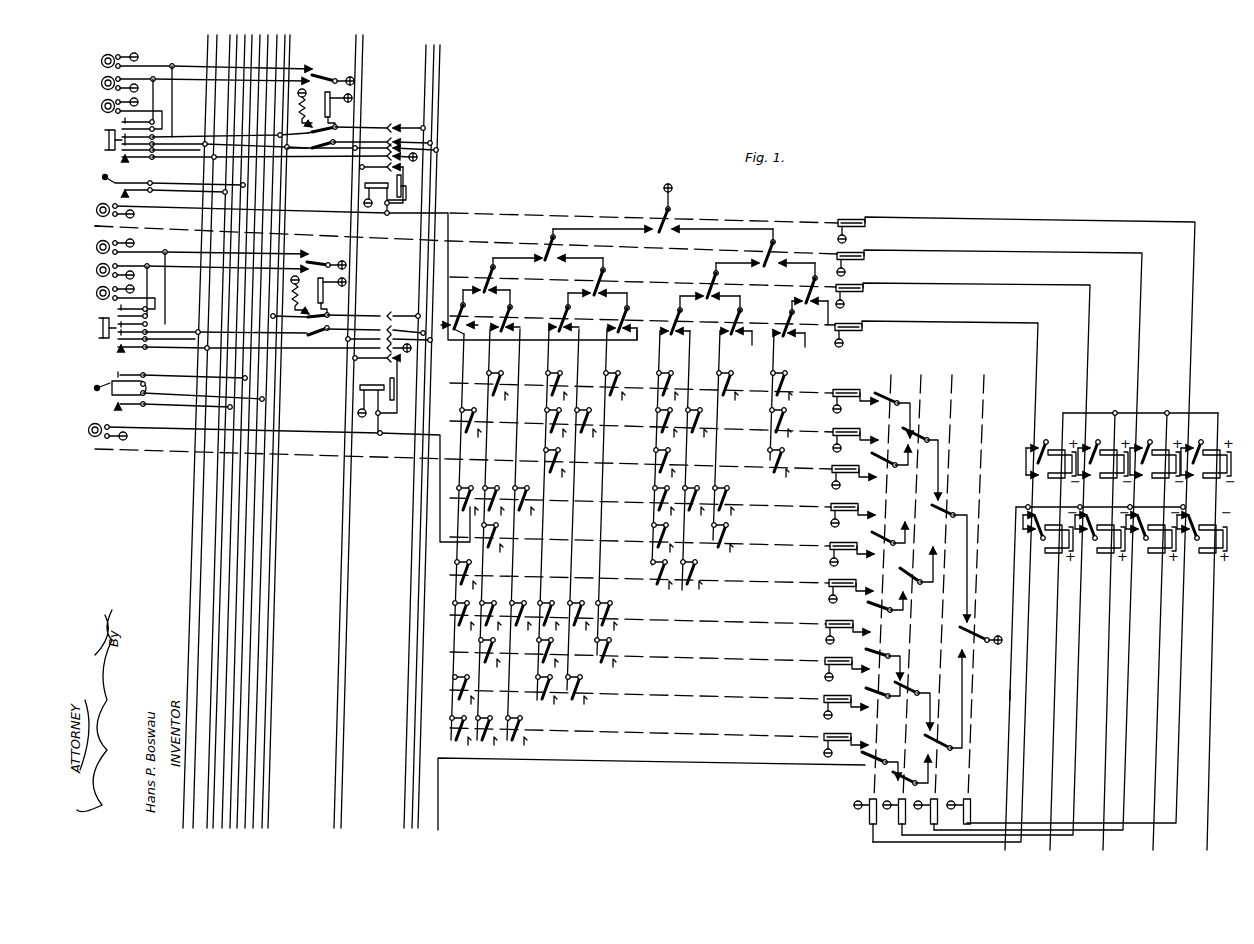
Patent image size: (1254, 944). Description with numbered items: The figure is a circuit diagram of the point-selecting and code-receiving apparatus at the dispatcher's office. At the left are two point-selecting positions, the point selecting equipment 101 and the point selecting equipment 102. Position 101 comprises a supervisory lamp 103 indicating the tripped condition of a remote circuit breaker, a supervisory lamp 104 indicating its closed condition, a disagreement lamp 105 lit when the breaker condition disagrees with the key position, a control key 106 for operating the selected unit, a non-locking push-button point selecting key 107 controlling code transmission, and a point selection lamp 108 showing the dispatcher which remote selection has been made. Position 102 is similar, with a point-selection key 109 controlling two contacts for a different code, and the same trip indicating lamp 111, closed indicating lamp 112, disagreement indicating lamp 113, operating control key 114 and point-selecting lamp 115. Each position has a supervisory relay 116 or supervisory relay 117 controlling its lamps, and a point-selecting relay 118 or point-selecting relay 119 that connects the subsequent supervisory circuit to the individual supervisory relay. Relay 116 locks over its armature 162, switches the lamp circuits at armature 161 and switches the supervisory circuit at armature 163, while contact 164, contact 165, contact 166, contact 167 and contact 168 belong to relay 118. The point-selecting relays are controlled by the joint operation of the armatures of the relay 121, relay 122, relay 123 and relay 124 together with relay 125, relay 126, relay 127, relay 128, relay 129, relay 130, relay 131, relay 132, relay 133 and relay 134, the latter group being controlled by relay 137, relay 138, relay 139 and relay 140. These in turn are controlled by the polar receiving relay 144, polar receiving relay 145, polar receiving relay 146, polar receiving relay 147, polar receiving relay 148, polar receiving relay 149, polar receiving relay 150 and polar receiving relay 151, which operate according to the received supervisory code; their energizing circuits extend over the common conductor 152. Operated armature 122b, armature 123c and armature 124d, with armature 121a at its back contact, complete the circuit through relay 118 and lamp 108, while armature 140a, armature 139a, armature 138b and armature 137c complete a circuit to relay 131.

The point selecting equipment 101 is at (99, 47).
The point selecting equipment 102 is at (101, 325).
The supervisory lamp 103 is at (106, 55).
The supervisory lamp 104 is at (101, 82).
The disagreement lamp 105 is at (101, 106).
The control key 106 is at (105, 134).
The point selecting key 107 is at (104, 176).
The point selection lamp 108 is at (103, 216).
The point-selection key 109 is at (96, 387).
The trip indicating lamp 111 is at (97, 249).
The closed indicating lamp 112 is at (97, 271).
The disagreement indicating lamp 113 is at (97, 294).
The operating control key 114 is at (101, 333).
The point-selecting lamp 115 is at (89, 428).
The supervisory relay 116 is at (330, 112).
The supervisory relay 117 is at (324, 293).
The point-selecting relay 118 is at (390, 182).
The point-selecting relay 119 is at (372, 385).
The relay 121 is at (854, 220).
The armature 121a is at (672, 206).
The relay 122 is at (854, 253).
The armature 122b is at (556, 236).
The relay 123 is at (854, 285).
The armature 123c is at (606, 268).
The relay 124 is at (854, 324).
The armature 124d is at (628, 311).
The relay 125 is at (843, 391).
The relay 126 is at (843, 430).
The relay 127 is at (831, 467).
The relay 128 is at (829, 505).
The relay 129 is at (828, 544).
The relay 130 is at (826, 581).
The relay 131 is at (824, 622).
The relay 132 is at (823, 659).
The relay 133 is at (821, 697).
The relay 134 is at (821, 735).
The relay 137 is at (869, 815).
The armature 137c is at (869, 648).
The relay 138 is at (903, 803).
The armature 138b is at (893, 686).
The relay 139 is at (935, 802).
The armature 139a is at (956, 741).
The relay 140 is at (968, 803).
The armature 140a is at (972, 630).
The polar receiving relay 144 is at (1046, 440).
The polar receiving relay 145 is at (1104, 438).
The polar receiving relay 146 is at (1152, 442).
The polar receiving relay 147 is at (1204, 444).
The polar receiving relay 148 is at (1043, 560).
The polar receiving relay 149 is at (1096, 560).
The polar receiving relay 150 is at (1147, 560).
The polar receiving relay 151 is at (1198, 560).
The conductor 152 is at (1010, 707).
The armature 161 is at (330, 69).
The armature 162 is at (314, 108).
The armature 163 is at (322, 152).
The contact 164 is at (395, 126).
The contact 165 is at (395, 141).
The contact 166 is at (395, 147).
The contact 167 is at (395, 155).
The contact 168 is at (397, 166).